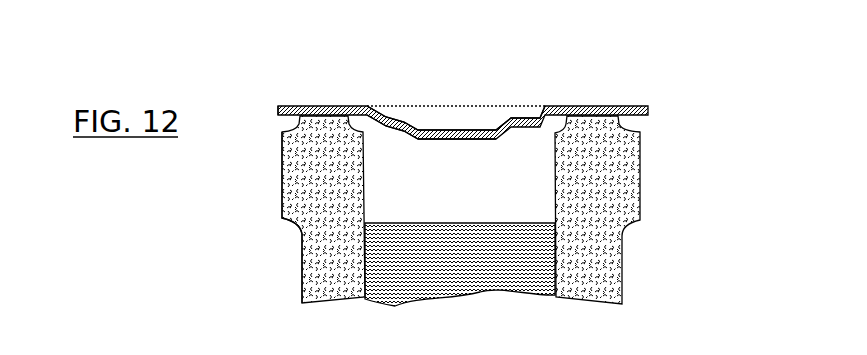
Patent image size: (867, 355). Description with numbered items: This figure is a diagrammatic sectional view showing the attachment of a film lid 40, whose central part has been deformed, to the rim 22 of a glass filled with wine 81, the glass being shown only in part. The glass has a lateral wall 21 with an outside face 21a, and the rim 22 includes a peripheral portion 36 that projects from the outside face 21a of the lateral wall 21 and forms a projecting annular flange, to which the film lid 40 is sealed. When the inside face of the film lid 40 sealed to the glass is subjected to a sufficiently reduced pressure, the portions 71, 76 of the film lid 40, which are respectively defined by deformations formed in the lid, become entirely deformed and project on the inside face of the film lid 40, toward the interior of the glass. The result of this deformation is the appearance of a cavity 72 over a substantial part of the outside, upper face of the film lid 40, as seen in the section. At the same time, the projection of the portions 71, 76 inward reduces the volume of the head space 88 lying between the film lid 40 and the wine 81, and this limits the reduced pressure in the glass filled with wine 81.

The cover plate 40 is at (640, 105).
The cavity 72 is at (447, 124).
The portion of the film lid 71 is at (445, 138).
The portion of the film lid 76 is at (384, 123).
The rim 22 is at (274, 125).
The peripheral portion 36 is at (275, 190).
The lateral wall 21 is at (603, 245).
The outside face 21a is at (298, 250).
The head space 88 is at (535, 210).
The wine 81 is at (447, 278).